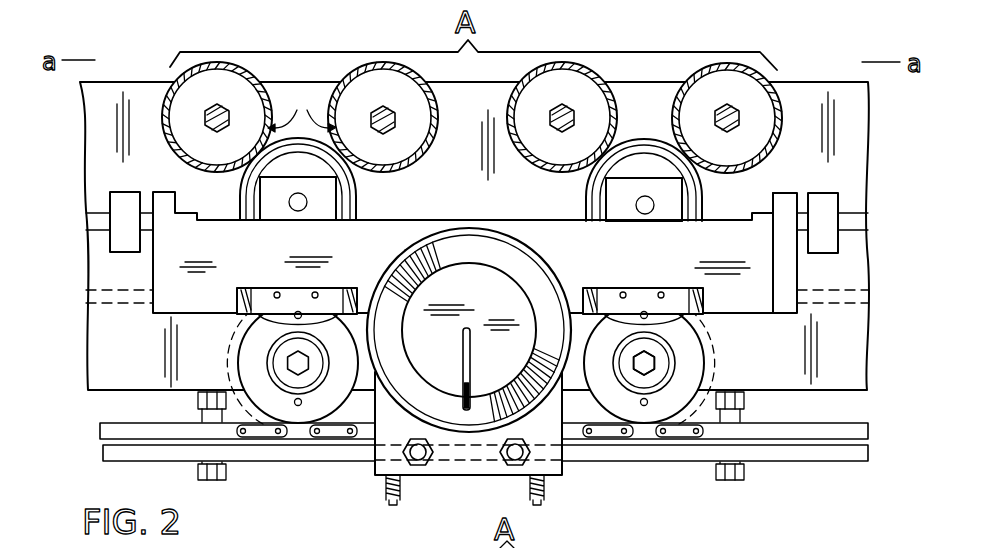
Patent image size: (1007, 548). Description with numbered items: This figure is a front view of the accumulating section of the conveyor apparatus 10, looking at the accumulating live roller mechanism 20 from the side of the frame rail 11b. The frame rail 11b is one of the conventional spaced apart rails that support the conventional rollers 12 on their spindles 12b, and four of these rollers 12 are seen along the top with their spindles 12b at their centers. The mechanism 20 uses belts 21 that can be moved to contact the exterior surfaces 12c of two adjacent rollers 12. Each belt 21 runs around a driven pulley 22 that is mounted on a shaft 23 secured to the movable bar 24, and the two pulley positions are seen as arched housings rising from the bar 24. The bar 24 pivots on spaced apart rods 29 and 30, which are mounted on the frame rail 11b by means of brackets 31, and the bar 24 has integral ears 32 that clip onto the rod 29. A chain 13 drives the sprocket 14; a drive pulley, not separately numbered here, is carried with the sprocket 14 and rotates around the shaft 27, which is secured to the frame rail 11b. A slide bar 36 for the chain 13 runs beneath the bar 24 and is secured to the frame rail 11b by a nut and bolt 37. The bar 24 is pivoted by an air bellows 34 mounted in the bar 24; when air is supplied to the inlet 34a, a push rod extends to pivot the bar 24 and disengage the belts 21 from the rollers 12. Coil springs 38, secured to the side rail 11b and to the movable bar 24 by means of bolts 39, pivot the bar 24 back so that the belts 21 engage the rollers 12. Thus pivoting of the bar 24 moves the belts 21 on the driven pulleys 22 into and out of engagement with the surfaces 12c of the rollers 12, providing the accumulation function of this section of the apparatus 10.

The conveyor apparatus 10 is at (548, 38).
The frame rail 11b is at (287, 67).
The rollers 12 is at (172, 83).
The spindles 12b is at (203, 118).
The exterior surfaces 12c is at (301, 109).
The chain 13 is at (260, 432).
The sprocket 14 is at (320, 400).
The accumulating live roller mechanism 20 is at (456, 208).
The belts 21 is at (362, 219).
The driven pulley 22 is at (288, 163).
The shaft 23 is at (302, 211).
The movable bar 24 is at (210, 301).
The shaft 27 is at (656, 364).
The rod 29 is at (866, 222).
The rod 30 is at (100, 235).
The brackets 31 is at (125, 193).
The integral ears 32 is at (775, 193).
The air bellows 34 is at (428, 240).
The inlet 34a is at (463, 369).
The slide bar 36 is at (818, 458).
The nut and bolt 37 is at (205, 412).
The coil springs 38 is at (413, 490).
The bolt 39 is at (436, 462).